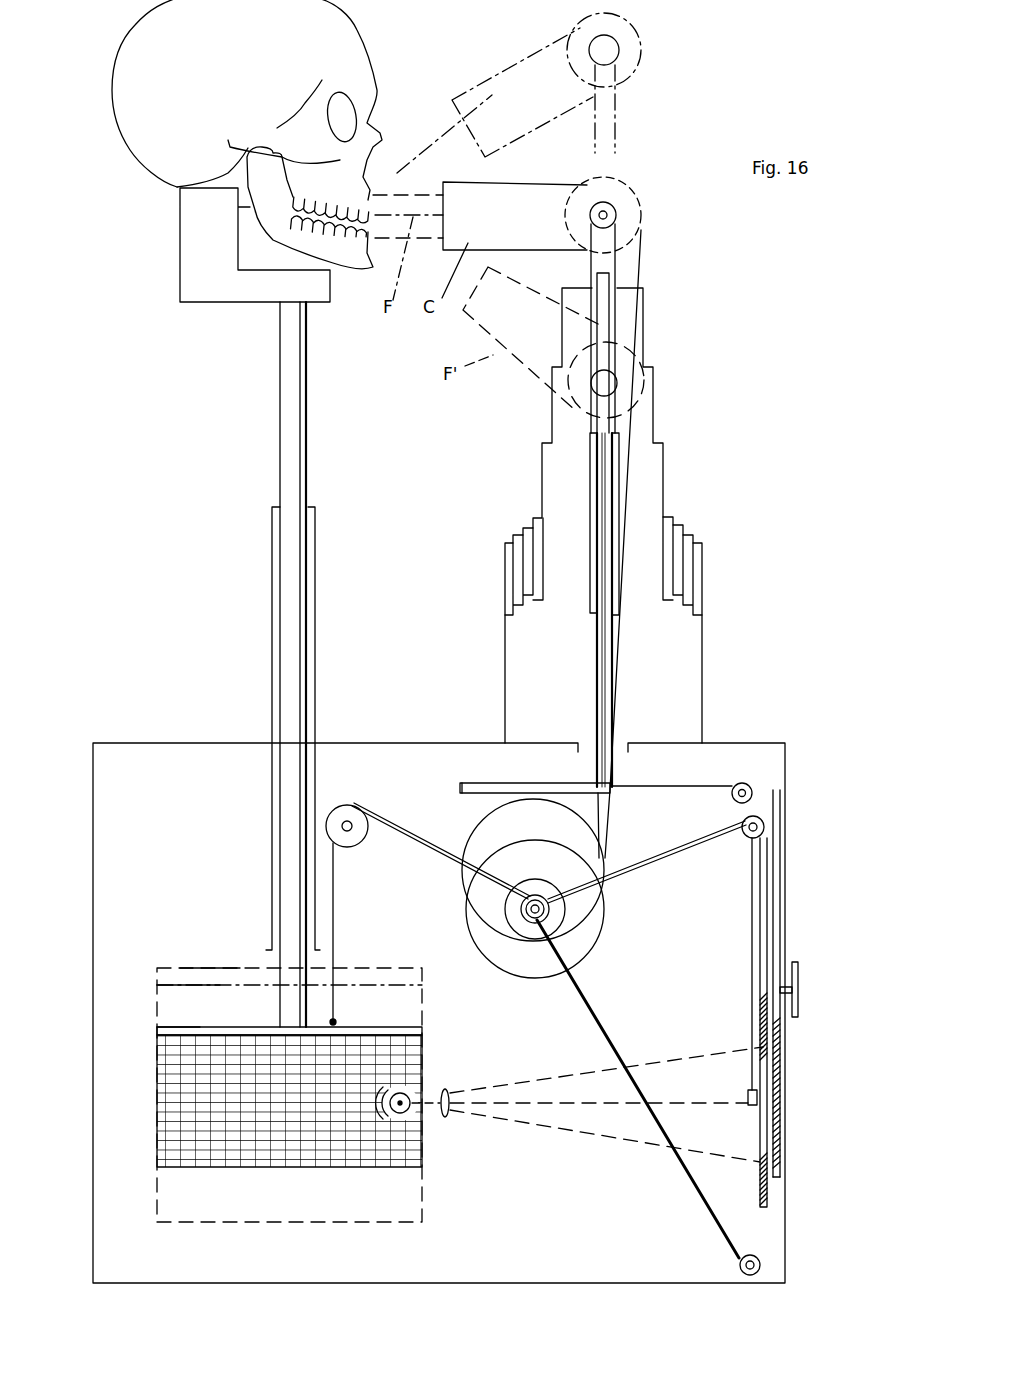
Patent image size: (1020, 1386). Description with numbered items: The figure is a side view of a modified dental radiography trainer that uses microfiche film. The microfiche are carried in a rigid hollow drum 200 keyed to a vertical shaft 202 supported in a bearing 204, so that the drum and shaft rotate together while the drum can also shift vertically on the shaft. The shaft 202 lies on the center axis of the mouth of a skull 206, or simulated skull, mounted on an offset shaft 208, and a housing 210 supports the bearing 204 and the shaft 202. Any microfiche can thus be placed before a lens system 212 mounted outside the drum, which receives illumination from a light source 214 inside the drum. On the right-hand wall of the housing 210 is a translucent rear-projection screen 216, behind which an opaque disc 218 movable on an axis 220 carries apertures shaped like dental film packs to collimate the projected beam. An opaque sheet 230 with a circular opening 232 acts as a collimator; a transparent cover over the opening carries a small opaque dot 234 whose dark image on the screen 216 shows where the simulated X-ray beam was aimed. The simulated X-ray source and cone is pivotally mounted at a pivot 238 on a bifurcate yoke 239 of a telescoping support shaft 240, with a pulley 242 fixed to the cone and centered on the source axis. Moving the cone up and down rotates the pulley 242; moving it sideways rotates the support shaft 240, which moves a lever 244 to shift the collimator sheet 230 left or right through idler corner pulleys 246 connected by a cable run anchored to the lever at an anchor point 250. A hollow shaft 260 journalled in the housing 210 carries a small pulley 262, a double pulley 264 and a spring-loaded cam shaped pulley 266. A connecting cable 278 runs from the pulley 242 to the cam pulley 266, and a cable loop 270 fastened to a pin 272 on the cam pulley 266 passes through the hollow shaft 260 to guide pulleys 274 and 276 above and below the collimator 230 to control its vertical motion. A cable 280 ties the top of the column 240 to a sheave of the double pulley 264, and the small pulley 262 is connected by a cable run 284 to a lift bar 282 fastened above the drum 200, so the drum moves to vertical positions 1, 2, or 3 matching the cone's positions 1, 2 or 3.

The vertical position 1 is at (178, 1028).
The vertical position 2 is at (193, 983).
The vertical position 3 is at (207, 967).
The hollow drum 200 is at (157, 1048).
The vertical shaft 202 is at (279, 436).
The bearing 204 is at (272, 555).
The skull 206 is at (150, 167).
The offset shaft 208 is at (193, 258).
The housing 210 is at (152, 740).
The lens system 212 is at (448, 1088).
The light source 214 is at (405, 1115).
The rear-projection screen 216 is at (781, 1070).
The disc 218 is at (781, 1180).
The axis 220 is at (798, 989).
The opaque sheet 230 is at (758, 1181).
The circular opening 232 is at (762, 1050).
The opaque dot 234 is at (787, 1105).
The pivot 238 is at (608, 211).
The bifurcate yoke 239 is at (617, 246).
The telescoping support shaft 240 is at (662, 486).
The pulley 242 is at (648, 210).
The lever 244 is at (463, 790).
The idler corner pulleys 246 is at (473, 788).
The anchor point 250 is at (462, 783).
The hollow shaft 260 is at (521, 914).
The small pulley 262 is at (506, 893).
The double pulley 264 is at (583, 950).
The cam shaped pulley 266 is at (472, 816).
The cable loop 270 is at (688, 856).
The pin 272 is at (500, 848).
The guide pulley 274 is at (746, 838).
The guide pulley 276 is at (740, 1270).
The connecting cable 278 is at (637, 275).
The cable 280 is at (605, 312).
The lift bar 282 is at (397, 1027).
The cable run 284 is at (402, 827).